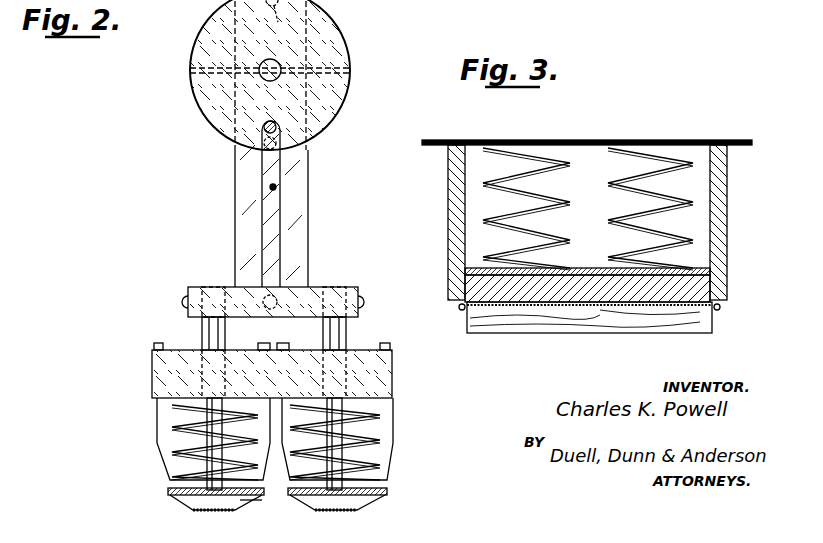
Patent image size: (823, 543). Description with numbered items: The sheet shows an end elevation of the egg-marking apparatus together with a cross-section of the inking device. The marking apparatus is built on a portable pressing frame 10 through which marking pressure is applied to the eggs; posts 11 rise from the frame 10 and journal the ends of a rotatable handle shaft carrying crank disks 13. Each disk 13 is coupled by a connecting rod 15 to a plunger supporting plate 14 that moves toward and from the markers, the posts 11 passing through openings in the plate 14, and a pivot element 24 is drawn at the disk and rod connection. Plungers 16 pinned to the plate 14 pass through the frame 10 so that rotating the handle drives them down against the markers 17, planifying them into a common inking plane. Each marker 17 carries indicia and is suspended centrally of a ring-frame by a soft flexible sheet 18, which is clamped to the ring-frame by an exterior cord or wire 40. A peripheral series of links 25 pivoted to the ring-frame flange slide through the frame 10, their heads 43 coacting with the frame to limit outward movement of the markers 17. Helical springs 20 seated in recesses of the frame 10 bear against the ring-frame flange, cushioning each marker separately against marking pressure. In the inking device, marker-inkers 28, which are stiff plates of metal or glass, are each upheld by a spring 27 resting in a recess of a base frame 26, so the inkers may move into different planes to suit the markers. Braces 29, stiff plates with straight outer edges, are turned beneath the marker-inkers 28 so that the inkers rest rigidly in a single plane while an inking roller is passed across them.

In FIG. 2, the main frame 10 is at (175, 372).
In FIG. 2, the posts 11 is at (302, 188).
In FIG. 2, the crank disks 13 is at (333, 48).
In FIG. 2, the plunger supporting plate 14 is at (352, 293).
In FIG. 2, the connecting rods 15 is at (268, 216).
In FIG. 2, the plungers 16 is at (212, 332).
In FIG. 2, the markers 17 is at (200, 513).
In FIG. 2, the flexible sheet 18 is at (250, 503).
In FIG. 2, the helical springs 20 is at (178, 425).
In FIG. 2, the pin 24 is at (218, 178).
In FIG. 2, the links 25 is at (158, 455).
In FIG. 3, the base frame 26 is at (632, 290).
In FIG. 3, the springs 27 is at (485, 183).
In FIG. 3, the marker-inkers 28 is at (702, 140).
In FIG. 3, the braces 29 is at (450, 237).
In FIG. 2, the cord or wire 40 is at (170, 492).
In FIG. 2, the heads 43 is at (157, 345).